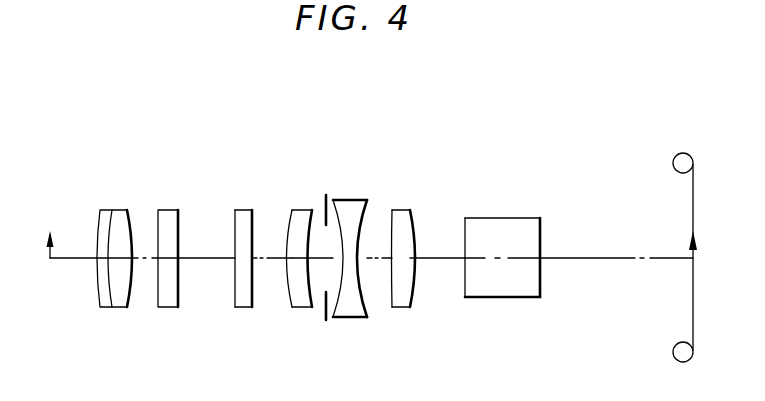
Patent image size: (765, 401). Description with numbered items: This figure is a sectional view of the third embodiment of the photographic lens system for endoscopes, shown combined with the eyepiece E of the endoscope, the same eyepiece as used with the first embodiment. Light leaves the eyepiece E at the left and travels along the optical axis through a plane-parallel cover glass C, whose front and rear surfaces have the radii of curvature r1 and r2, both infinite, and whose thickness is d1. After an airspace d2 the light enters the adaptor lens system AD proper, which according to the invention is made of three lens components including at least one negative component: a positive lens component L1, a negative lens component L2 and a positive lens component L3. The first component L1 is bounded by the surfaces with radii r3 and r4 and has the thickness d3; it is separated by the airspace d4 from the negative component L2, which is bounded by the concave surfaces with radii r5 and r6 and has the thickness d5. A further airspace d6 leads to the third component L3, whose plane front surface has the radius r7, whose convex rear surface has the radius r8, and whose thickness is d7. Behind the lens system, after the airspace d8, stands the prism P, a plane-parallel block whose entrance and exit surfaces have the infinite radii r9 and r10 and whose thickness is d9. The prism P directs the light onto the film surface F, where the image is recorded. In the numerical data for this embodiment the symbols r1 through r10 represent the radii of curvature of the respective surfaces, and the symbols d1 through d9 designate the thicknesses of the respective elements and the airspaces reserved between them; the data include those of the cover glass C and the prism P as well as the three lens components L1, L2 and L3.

The eyepiece E is at (185, 184).
The cover glass C is at (238, 209).
The afocal lens assembly AD is at (413, 109).
The positive lens component L1 is at (293, 210).
The negative lens component L2 is at (344, 200).
The positive lens component L3 is at (394, 210).
The prism P is at (503, 218).
The film surface F is at (692, 183).
The radius of curvature r1 is at (232, 219).
The radius of curvature r2 is at (254, 218).
The radius of curvature r3 is at (287, 237).
The radius of curvature r4 is at (313, 212).
The radius of curvature r5 is at (333, 199).
The radius of curvature r6 is at (365, 213).
The radius of curvature r7 is at (391, 211).
The radius of curvature r8 is at (417, 216).
The radius of curvature r9 is at (464, 229).
The radius of curvature r10 is at (541, 223).
The thickness d1 is at (243, 260).
The airspace d2 is at (259, 260).
The thickness d3 is at (299, 262).
The airspace d4 is at (320, 272).
The thickness d5 is at (346, 308).
The airspace d6 is at (377, 261).
The thickness d7 is at (397, 280).
The airspace d8 is at (433, 261).
The thickness d9 is at (488, 259).